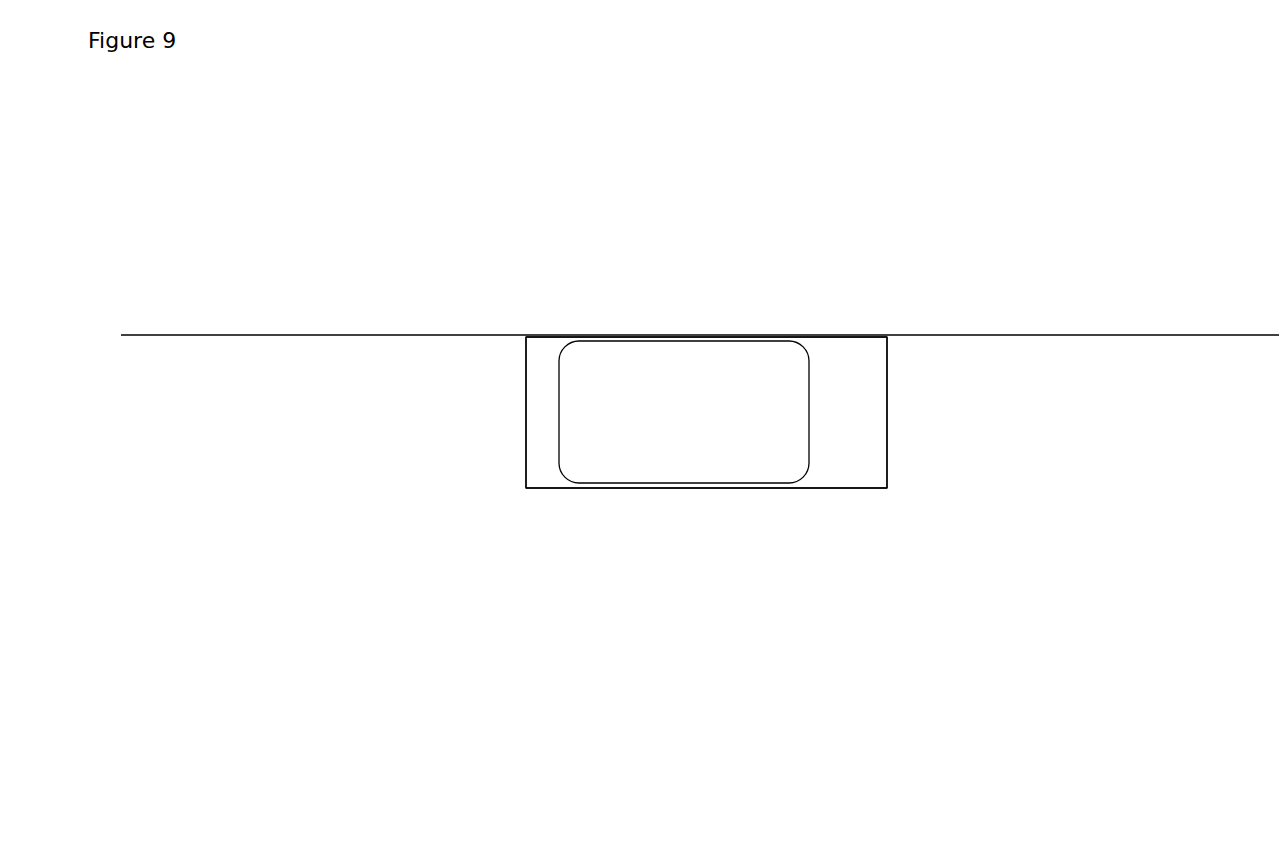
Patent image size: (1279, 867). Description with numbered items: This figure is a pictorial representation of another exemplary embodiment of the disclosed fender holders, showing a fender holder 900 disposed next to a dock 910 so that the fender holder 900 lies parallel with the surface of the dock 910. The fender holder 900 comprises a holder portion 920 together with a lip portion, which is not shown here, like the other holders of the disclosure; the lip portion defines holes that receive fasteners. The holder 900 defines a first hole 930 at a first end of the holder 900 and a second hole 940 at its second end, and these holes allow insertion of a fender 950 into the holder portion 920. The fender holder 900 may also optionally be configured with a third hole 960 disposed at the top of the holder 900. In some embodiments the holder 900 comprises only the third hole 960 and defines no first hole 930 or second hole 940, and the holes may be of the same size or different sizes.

The fender holder 900 is at (706, 412).
The dock 910 is at (946, 328).
The holder portion 920 is at (783, 494).
The first hole 930 is at (526, 413).
The second hole 940 is at (887, 402).
The fender 950 is at (698, 363).
The third hole 960 is at (582, 335).